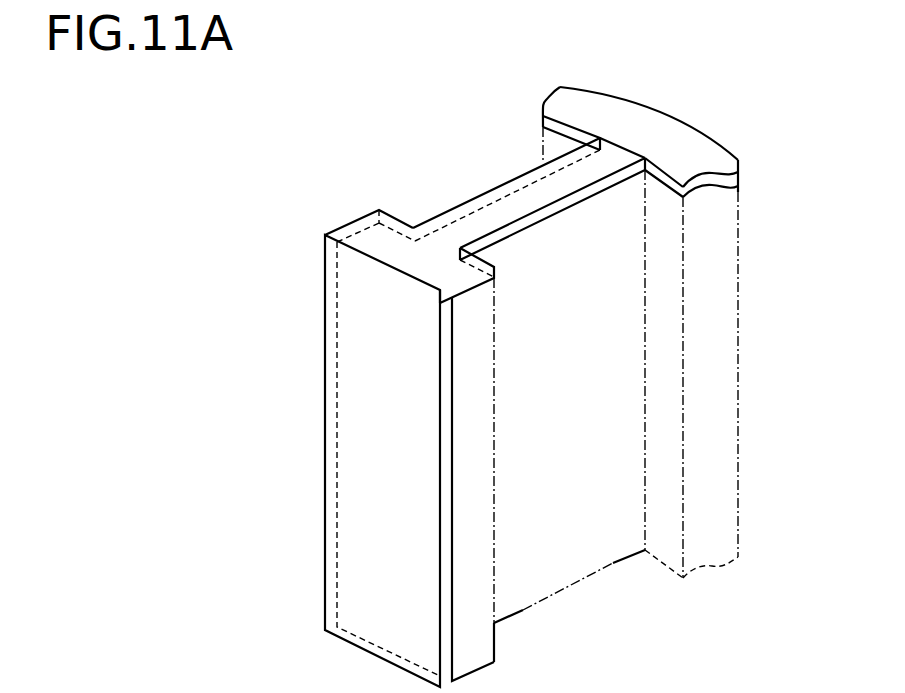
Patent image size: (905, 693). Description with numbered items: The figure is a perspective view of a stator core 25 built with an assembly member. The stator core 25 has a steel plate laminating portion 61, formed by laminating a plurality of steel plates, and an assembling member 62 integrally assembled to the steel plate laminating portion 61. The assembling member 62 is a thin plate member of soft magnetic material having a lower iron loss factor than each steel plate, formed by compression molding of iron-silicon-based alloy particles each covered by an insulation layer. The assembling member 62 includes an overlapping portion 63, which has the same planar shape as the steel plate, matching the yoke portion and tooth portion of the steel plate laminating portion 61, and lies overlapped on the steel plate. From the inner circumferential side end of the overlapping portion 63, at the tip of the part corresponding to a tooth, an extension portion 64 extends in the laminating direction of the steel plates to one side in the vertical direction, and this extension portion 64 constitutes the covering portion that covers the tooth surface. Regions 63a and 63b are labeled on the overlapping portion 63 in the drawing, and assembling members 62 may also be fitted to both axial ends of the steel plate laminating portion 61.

The stator core 25 is at (327, 111).
The steel plate laminating portion 61 is at (598, 552).
The assembling member 62 is at (325, 316).
The overlapping portion 63 is at (533, 228).
The flange portion of upper wall 63a is at (710, 183).
The rail portion of upper wall 63b is at (592, 198).
The extension portion 64 is at (455, 491).